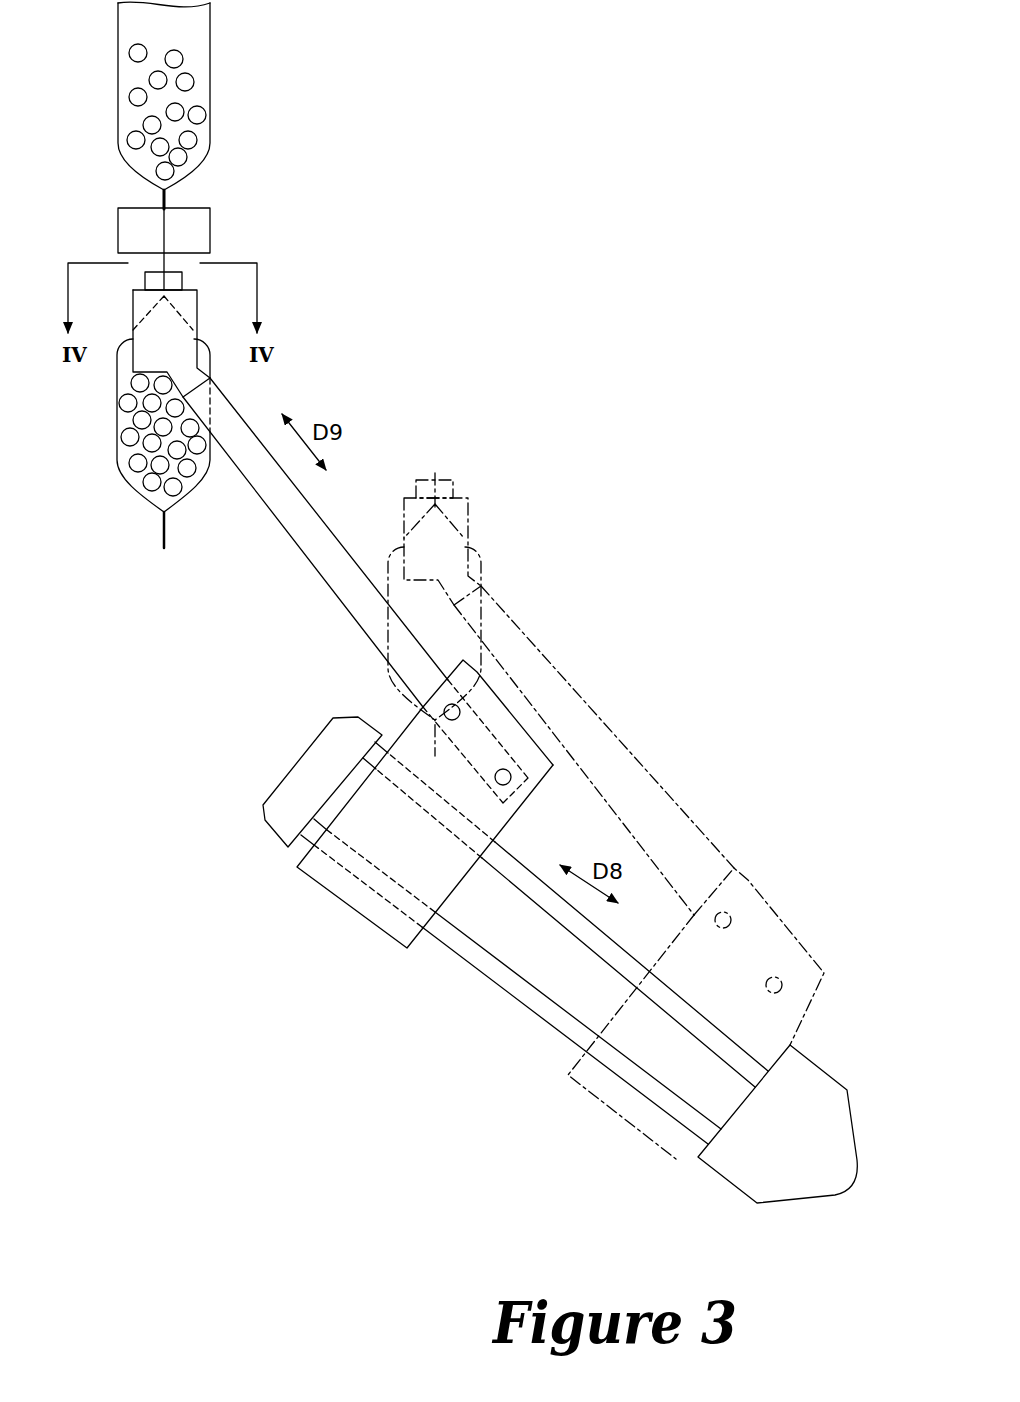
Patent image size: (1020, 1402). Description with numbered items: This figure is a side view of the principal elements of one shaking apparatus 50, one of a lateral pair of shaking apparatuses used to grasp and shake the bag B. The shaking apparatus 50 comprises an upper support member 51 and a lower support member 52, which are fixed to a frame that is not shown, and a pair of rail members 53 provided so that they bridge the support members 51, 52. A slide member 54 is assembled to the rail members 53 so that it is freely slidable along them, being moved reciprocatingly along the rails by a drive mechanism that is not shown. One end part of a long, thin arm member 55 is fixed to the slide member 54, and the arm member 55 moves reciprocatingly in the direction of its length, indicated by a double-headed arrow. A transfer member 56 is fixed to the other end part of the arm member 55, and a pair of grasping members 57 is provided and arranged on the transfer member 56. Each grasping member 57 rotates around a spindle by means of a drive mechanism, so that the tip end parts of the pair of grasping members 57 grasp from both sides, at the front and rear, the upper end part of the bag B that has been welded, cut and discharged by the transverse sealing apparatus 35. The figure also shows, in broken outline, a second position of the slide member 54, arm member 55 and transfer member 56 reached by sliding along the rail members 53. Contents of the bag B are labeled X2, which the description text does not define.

The transverse sealing apparatus 35 is at (226, 203).
The grasping members 57 is at (146, 281).
The transfer member 56 is at (178, 320).
The bag B is at (128, 483).
The articles X2 is at (118, 412).
The arm member 55 is at (316, 566).
The slide member 54 is at (420, 730).
The shaking apparatus 50 is at (633, 702).
The rail members 53 is at (517, 868).
The upper support member 51 is at (330, 738).
The lower support member 52 is at (840, 1125).